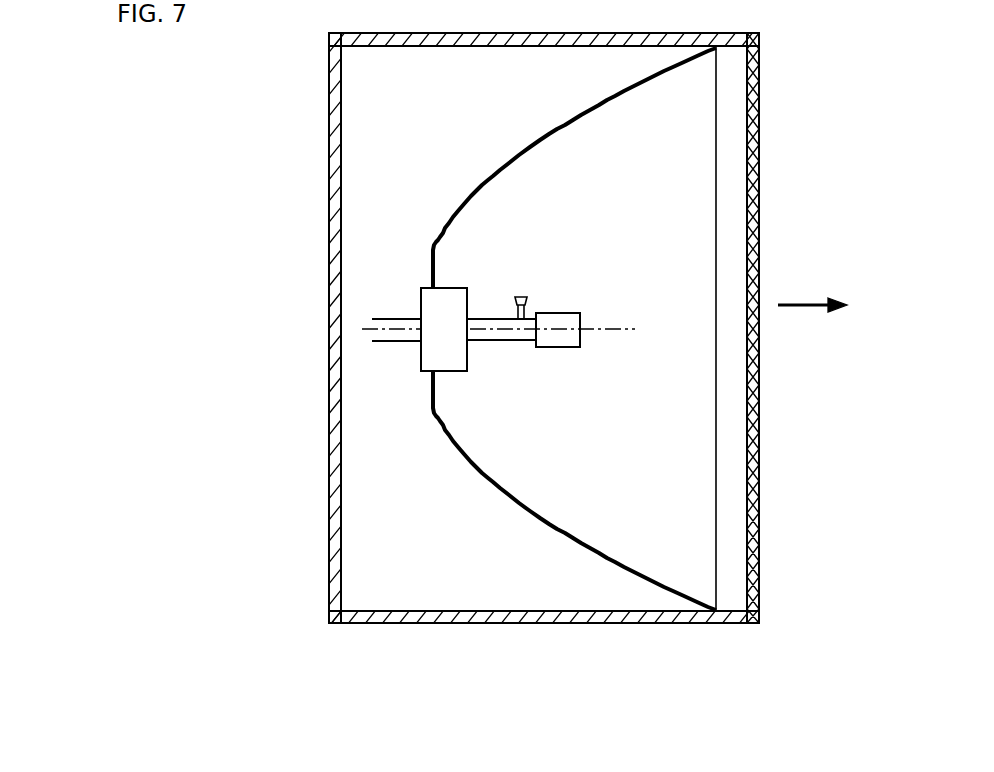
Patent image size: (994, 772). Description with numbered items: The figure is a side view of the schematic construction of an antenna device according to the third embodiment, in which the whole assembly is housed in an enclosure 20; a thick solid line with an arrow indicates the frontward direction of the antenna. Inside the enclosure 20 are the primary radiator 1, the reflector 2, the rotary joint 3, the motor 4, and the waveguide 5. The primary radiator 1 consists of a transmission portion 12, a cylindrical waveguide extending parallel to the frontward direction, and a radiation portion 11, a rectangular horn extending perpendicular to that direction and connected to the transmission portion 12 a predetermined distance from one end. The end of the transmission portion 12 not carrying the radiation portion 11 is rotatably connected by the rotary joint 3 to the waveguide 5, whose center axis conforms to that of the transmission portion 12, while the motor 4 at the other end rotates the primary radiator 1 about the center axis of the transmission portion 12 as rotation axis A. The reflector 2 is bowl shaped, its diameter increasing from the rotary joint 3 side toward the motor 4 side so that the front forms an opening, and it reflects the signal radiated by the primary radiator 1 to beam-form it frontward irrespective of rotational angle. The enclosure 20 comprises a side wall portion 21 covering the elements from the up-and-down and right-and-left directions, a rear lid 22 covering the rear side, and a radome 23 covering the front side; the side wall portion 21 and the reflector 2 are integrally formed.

The primary radiator 1 is at (507, 330).
The reflector 2 is at (497, 184).
The rotary joint 3 is at (428, 368).
The motor 4 is at (582, 317).
The waveguide 5 is at (400, 321).
The radiation portion 11 is at (528, 303).
The transmission portion 12 is at (499, 322).
The enclosure 20 is at (497, 378).
The side wall portion 21 is at (498, 618).
The rear lid 22 is at (333, 365).
The radome 23 is at (755, 460).